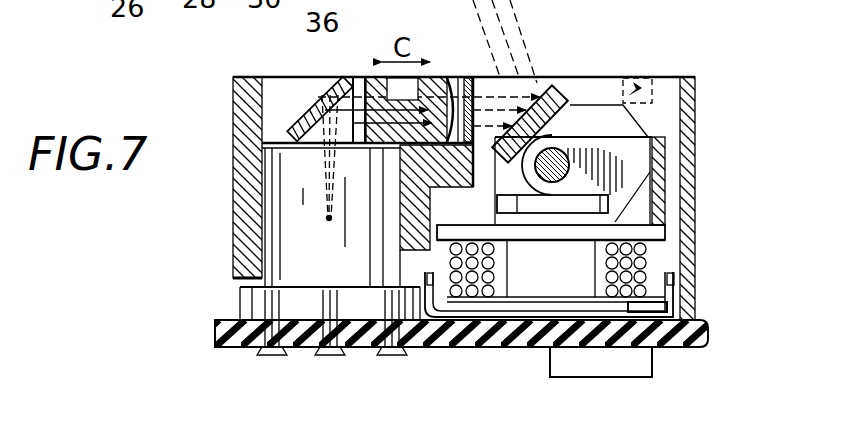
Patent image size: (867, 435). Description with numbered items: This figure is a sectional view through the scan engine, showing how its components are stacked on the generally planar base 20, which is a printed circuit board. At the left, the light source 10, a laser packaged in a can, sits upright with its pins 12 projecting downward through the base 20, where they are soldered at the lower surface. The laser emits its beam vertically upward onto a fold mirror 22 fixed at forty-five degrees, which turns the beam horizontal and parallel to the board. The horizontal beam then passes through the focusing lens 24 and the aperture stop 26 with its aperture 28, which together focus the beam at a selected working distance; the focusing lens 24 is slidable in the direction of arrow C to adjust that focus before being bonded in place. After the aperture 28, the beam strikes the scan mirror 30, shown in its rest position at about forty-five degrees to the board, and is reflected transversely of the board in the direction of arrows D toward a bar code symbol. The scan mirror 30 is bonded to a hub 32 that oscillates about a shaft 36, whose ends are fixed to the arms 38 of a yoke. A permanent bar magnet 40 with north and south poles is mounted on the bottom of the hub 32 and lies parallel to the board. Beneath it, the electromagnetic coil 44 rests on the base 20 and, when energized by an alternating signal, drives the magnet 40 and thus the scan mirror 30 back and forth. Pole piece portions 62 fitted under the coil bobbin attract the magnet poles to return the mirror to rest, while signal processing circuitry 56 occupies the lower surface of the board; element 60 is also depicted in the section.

The light source 10 is at (290, 201).
The pins 12 is at (391, 356).
The base 20 is at (208, 348).
The fold mirror 22 is at (314, 100).
The focusing lens 24 is at (377, 84).
The aperture stop 26 is at (472, 77).
The aperture 28 is at (490, 100).
The scan mirror 30 is at (556, 109).
The hub 32 is at (632, 87).
The shaft 36 is at (556, 151).
The arms 38 is at (385, 10).
The permanent magnet 40 is at (620, 212).
The electromagnetic coil 44 is at (500, 287).
The signal processing circuitry 56 is at (618, 365).
The circuit board 60 is at (563, 303).
The pole piece portions 62 is at (674, 277).